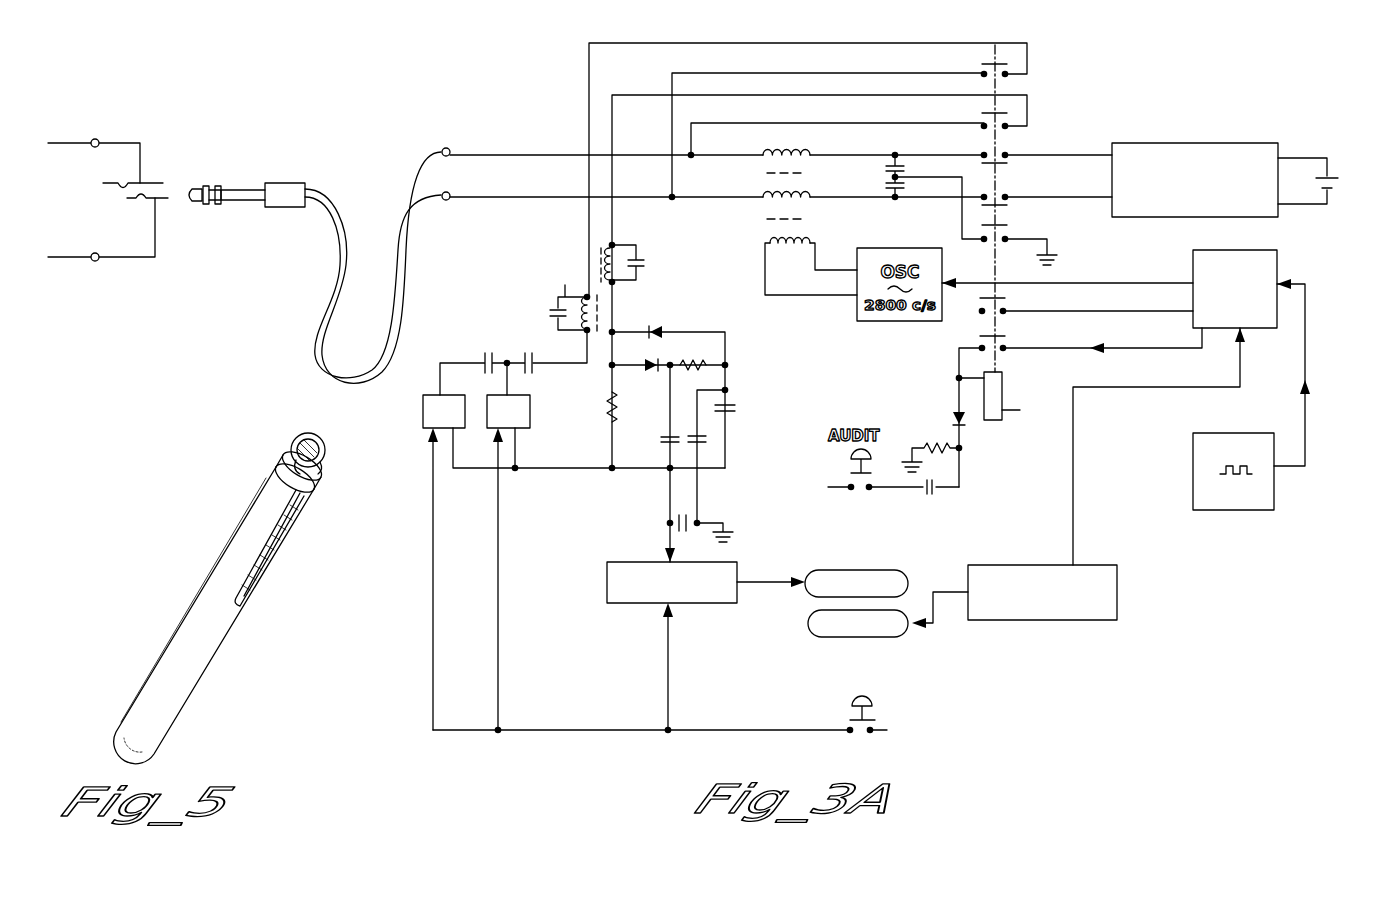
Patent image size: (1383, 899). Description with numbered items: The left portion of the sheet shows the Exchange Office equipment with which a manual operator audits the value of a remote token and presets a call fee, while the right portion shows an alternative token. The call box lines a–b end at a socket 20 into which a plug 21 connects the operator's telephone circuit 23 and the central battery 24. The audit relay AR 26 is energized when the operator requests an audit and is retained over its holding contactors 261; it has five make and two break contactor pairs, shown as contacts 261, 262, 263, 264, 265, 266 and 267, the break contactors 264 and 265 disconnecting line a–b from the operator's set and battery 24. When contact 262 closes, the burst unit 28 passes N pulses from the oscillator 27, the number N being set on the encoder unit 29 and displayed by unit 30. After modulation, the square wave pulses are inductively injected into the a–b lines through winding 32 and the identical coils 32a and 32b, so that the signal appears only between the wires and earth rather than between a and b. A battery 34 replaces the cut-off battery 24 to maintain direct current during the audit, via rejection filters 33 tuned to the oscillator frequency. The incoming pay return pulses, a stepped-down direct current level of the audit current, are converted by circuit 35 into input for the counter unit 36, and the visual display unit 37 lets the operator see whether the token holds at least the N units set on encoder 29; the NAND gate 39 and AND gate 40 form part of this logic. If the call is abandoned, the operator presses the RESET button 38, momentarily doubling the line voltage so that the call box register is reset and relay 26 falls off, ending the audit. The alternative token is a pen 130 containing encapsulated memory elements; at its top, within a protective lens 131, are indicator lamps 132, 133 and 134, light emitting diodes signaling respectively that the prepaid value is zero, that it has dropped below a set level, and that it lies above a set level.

In FIG. 3A, the socket 20 is at (148, 183).
In FIG. 3A, the plug 21 is at (235, 190).
In FIG. 3A, the operator's telephone circuit 23 is at (1200, 143).
In FIG. 3A, the central battery 24 is at (1343, 177).
In FIG. 3A, the audit relay AR 26 is at (993, 420).
In FIG. 3A, the holding contactors 261 is at (1080, 404).
In FIG. 3A, the make contactor 262 is at (1086, 299).
In FIG. 3A, the make contactor 263 is at (1019, 238).
In FIG. 3A, the break contactor 264 is at (1010, 186).
In FIG. 3A, the break contactor 265 is at (1010, 145).
In FIG. 3A, the make contactor 266 is at (1020, 116).
In FIG. 3A, the make contactor 267 is at (1020, 63).
In FIG. 3A, the oscillator 27 is at (1233, 433).
In FIG. 3A, the burst of N pulses unit 28 is at (1270, 258).
In FIG. 3A, the encoder unit 29 is at (1040, 620).
In FIG. 3A, the display unit 30 is at (808, 630).
In FIG. 3A, the modulator coil 32 is at (811, 259).
In FIG. 3A, the coil 32a is at (803, 151).
In FIG. 3A, the coil 32b is at (805, 194).
In FIG. 3A, the rejection filter 33 is at (615, 245).
In FIG. 3A, the battery 34 is at (512, 342).
In FIG. 3A, the converter circuit 35 is at (660, 440).
In FIG. 3A, the counter unit 36 is at (628, 603).
In FIG. 3A, the visual display unit 37 is at (845, 570).
In FIG. 3A, the RESET button 38 is at (847, 703).
In FIG. 3A, the NAND gate 39 is at (530, 412).
In FIG. 3A, the AND gate 40 is at (423, 411).
In FIG. 5, the pen 130 is at (195, 616).
In FIG. 5, the protective lens or window 131 is at (302, 430).
In FIG. 5, the indicator lamp 132 is at (326, 462).
In FIG. 5, the indicator lamp 133 is at (322, 448).
In FIG. 5, the indicator lamp 134 is at (284, 447).